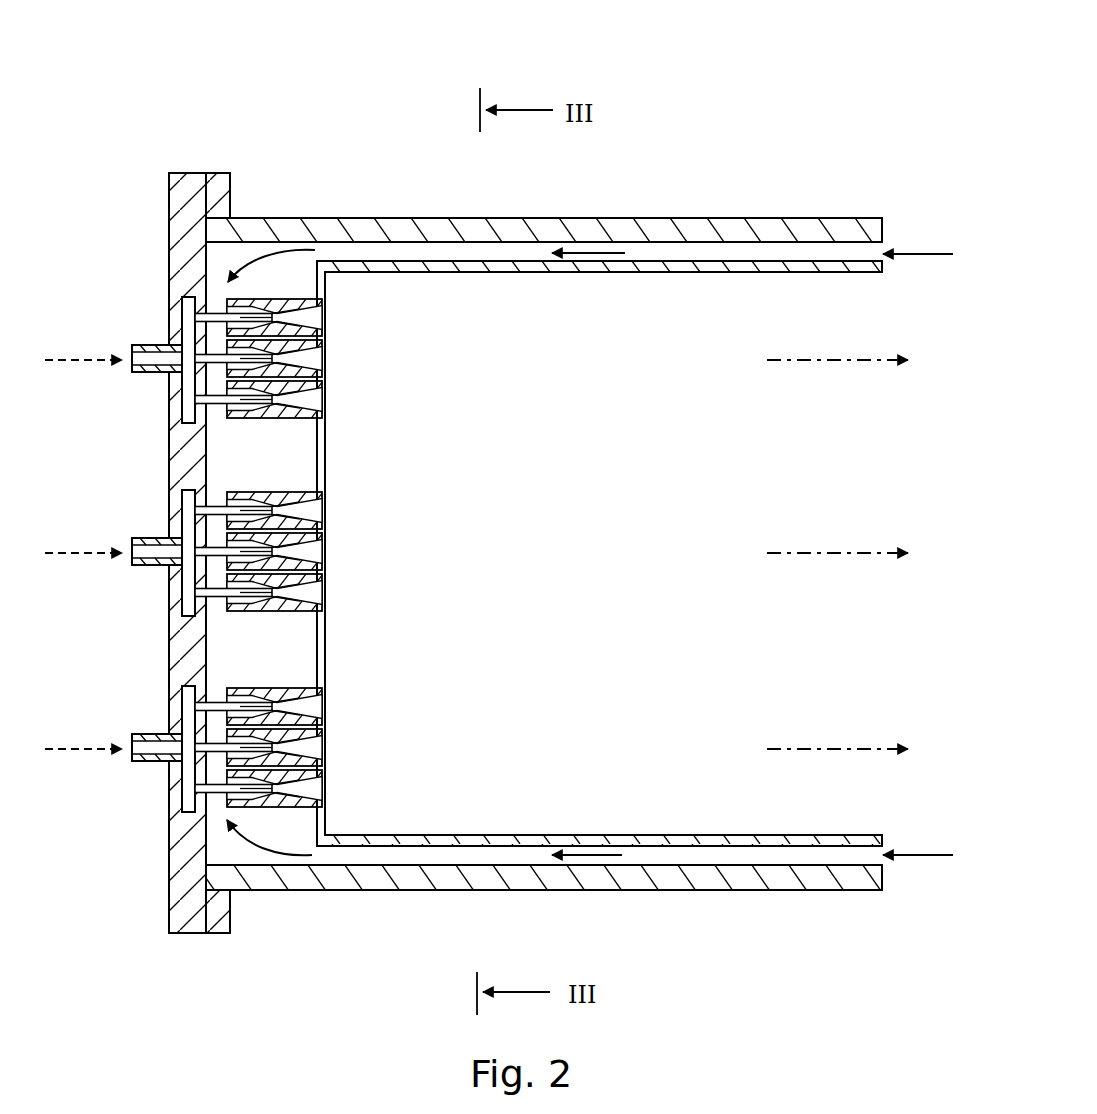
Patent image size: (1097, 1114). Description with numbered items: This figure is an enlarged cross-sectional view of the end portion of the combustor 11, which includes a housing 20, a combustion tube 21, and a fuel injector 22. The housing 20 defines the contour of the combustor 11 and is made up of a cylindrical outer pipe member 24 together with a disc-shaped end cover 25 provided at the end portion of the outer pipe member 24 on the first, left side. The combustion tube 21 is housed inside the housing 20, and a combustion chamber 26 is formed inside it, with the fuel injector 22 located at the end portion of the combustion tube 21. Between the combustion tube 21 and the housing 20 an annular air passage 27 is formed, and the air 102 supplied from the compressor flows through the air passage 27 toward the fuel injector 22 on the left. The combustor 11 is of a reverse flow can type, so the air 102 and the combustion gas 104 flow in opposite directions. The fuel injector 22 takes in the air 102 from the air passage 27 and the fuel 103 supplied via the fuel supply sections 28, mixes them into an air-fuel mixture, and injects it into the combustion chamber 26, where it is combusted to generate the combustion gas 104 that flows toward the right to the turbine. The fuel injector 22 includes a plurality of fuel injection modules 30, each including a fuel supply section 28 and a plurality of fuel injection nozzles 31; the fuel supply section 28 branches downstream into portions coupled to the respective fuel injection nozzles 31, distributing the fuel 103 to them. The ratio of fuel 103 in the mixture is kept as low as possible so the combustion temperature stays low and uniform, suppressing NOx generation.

The combustor 11 is at (841, 82).
The housing 20 is at (544, 520).
The combustion tube 21 is at (765, 266).
The fuel injector 22 is at (393, 531).
The outer pipe member 24 is at (600, 232).
The end cover 25 is at (185, 183).
The combustion chamber 26 is at (607, 548).
The air passage 27 is at (410, 250).
The fuel supply section 28 is at (177, 312).
The fuel injection module 30 is at (323, 553).
The fuel injection nozzle 31 is at (306, 323).
The air 102 is at (930, 248).
The fuel 103 is at (68, 352).
The combustion gas 104 is at (822, 358).